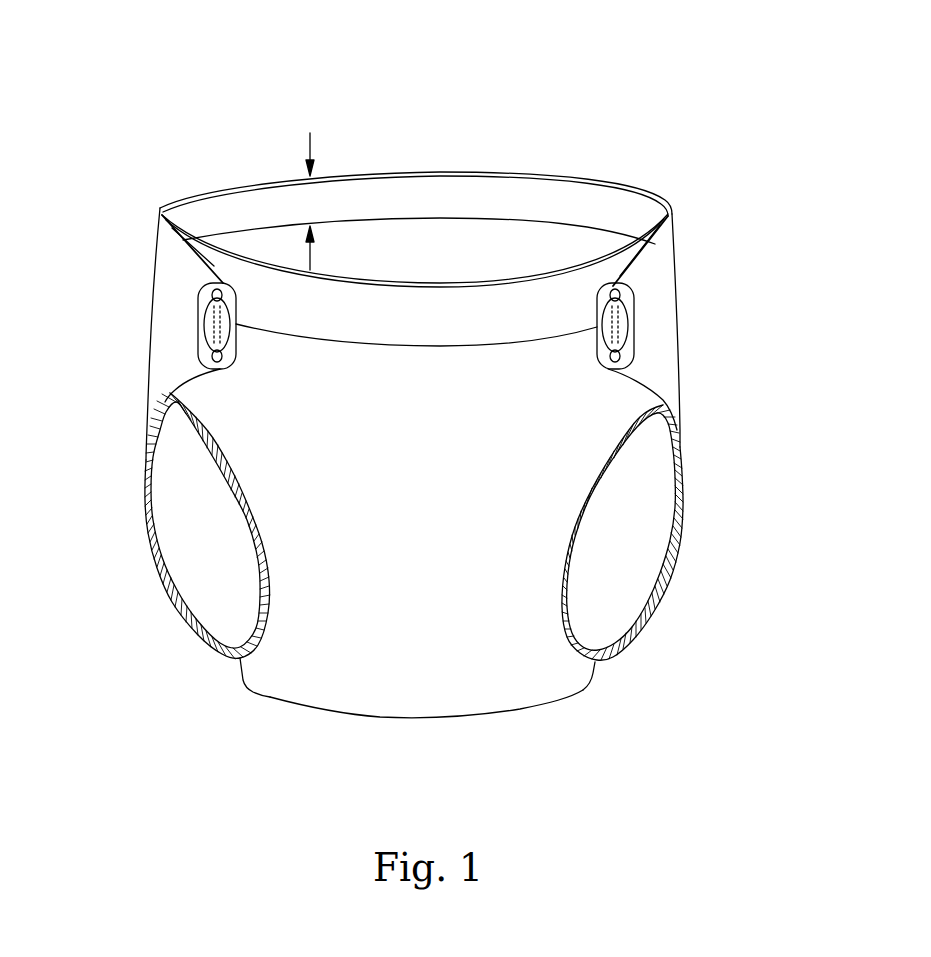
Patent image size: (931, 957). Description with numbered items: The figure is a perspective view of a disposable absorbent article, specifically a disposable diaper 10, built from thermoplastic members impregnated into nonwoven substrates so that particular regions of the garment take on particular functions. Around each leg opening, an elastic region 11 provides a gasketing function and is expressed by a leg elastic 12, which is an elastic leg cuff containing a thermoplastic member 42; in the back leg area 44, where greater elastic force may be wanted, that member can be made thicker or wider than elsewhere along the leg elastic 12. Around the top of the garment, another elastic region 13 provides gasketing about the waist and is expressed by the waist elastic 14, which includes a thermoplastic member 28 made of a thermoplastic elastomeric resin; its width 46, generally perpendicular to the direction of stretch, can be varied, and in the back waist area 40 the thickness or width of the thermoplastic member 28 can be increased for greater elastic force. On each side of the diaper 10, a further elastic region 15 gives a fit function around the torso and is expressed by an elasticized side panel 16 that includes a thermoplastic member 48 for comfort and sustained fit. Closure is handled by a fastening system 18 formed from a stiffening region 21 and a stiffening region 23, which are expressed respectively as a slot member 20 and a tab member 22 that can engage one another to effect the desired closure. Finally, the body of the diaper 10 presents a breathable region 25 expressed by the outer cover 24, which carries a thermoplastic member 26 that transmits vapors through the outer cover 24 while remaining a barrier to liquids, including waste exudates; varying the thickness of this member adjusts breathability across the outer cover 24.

The disposable diaper 10 is at (437, 250).
The elastic region 11 is at (147, 503).
The leg elastic 12 is at (160, 408).
The elastic region 13 is at (232, 218).
The waist elastic 14 is at (260, 194).
The elastic region 15 is at (668, 395).
The elasticized side panel 16 is at (153, 272).
The fastening system 18 is at (642, 276).
The slot member 20 is at (613, 286).
The stiffening region 21 is at (620, 296).
The tab member 22 is at (605, 323).
The stiffening region 23 is at (630, 266).
The outer cover 24 is at (348, 647).
The breathable region 25 is at (507, 652).
The thermoplastic member 26 is at (427, 645).
The thermoplastic member 28 is at (374, 196).
The back waist area 40 is at (403, 194).
The thermoplastic member 42 is at (170, 597).
The back leg area 44 is at (687, 460).
The width 46 is at (307, 187).
The thermoplastic member 48 is at (177, 333).